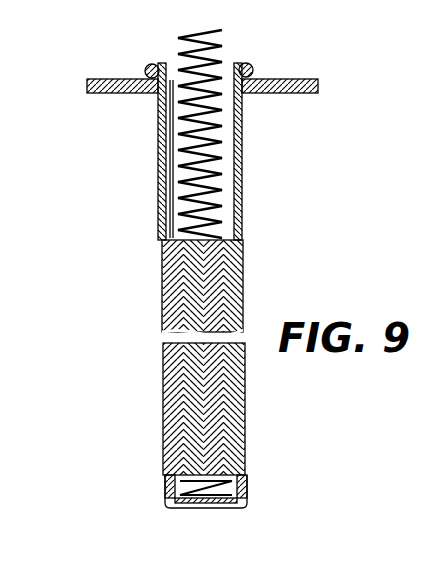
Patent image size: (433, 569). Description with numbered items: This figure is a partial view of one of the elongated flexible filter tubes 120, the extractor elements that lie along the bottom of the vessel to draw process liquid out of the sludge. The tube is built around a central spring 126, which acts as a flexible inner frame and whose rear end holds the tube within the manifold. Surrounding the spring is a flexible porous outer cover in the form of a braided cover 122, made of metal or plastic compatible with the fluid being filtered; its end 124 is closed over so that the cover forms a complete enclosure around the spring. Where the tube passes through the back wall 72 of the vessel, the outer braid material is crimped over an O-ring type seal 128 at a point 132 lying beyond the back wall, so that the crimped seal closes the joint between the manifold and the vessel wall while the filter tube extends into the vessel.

The back wall 72 is at (106, 79).
The elongated flexible filter tube 120 is at (156, 274).
The braided cover 122 is at (243, 280).
The end 124 is at (222, 509).
The spring 126 is at (218, 40).
The O-ring type seal 128 is at (158, 95).
The crimp point 132 is at (153, 63).